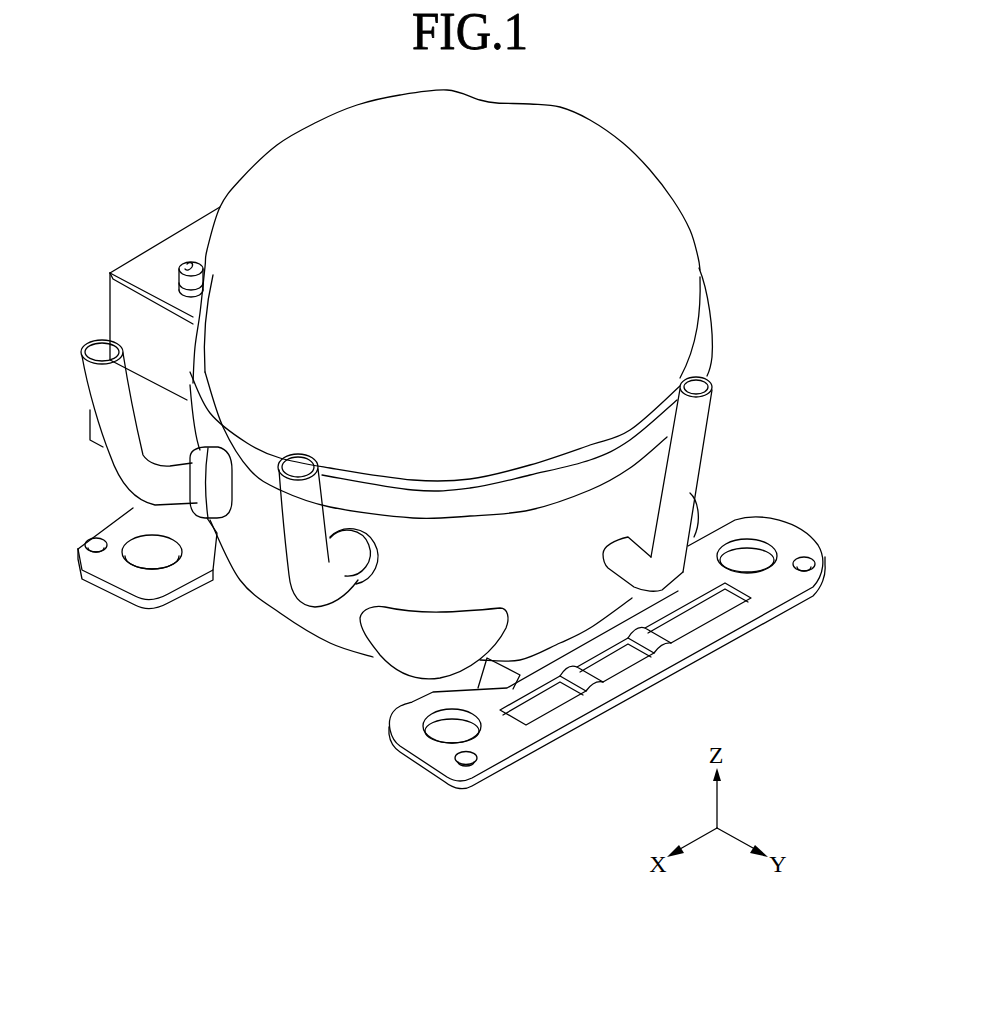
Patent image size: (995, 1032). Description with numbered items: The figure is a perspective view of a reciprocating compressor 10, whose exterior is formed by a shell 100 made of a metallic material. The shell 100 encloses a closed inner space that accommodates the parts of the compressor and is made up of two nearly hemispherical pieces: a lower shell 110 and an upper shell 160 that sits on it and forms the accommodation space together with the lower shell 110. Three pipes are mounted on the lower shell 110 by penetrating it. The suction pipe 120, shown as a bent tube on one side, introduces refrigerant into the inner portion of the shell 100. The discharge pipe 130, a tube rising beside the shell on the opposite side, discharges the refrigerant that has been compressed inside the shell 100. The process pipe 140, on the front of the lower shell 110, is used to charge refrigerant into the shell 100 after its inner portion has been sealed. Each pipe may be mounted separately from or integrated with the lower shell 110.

The reciprocating compressor 10 is at (102, 235).
The shell 100 is at (816, 284).
The lower shell 110 is at (713, 361).
The upper shell 160 is at (660, 290).
The suction pipe 120 is at (110, 452).
The discharge pipe 130 is at (693, 440).
The process pipe 140 is at (297, 563).